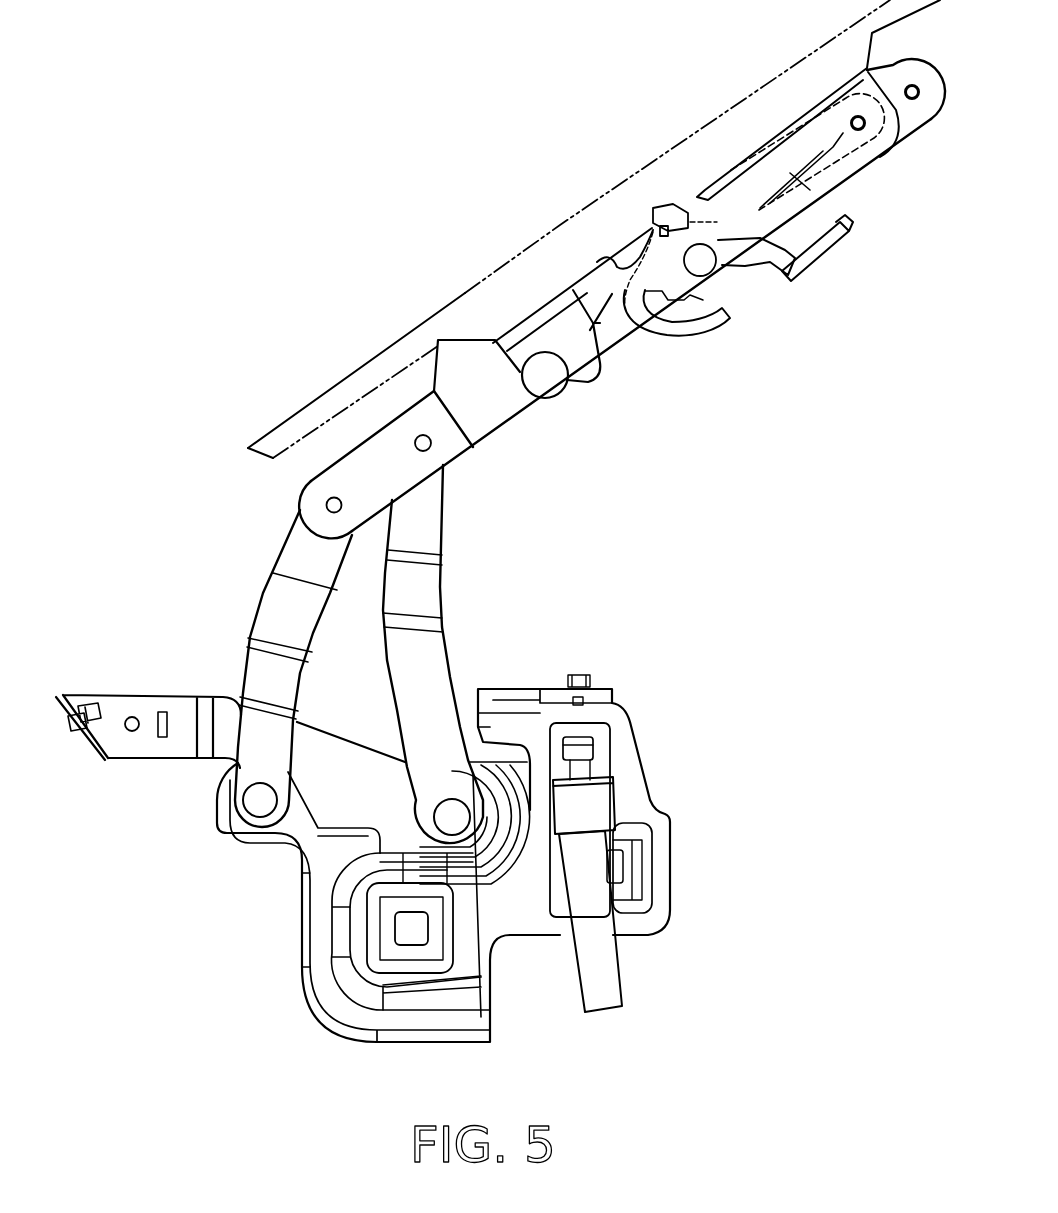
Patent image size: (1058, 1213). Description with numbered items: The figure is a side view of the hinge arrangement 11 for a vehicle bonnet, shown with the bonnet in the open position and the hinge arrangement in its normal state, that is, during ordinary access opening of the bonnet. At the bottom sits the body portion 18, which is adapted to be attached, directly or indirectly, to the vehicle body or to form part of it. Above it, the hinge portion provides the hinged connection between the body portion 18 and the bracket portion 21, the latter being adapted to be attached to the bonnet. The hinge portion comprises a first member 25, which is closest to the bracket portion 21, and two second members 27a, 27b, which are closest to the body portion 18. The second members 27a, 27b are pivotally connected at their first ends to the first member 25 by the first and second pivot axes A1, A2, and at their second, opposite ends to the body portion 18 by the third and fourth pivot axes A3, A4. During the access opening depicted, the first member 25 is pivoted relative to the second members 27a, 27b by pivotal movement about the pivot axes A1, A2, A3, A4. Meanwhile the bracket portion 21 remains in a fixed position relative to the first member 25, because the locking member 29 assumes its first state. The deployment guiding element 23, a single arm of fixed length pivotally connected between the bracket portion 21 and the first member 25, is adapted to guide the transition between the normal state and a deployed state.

The hinge arrangement 11 is at (500, 527).
The body portion 18 is at (432, 860).
The bracket portion 21 is at (547, 337).
The deployment guiding element 23 is at (800, 160).
The first member 25 is at (582, 328).
The second member 27a is at (287, 614).
The second member 27b is at (413, 590).
The locking member 29 is at (765, 262).
The first pivot axis A1 is at (330, 500).
The second pivot axis A2 is at (374, 374).
The third pivot axis A3 is at (260, 800).
The fourth pivot axis A4 is at (490, 1012).